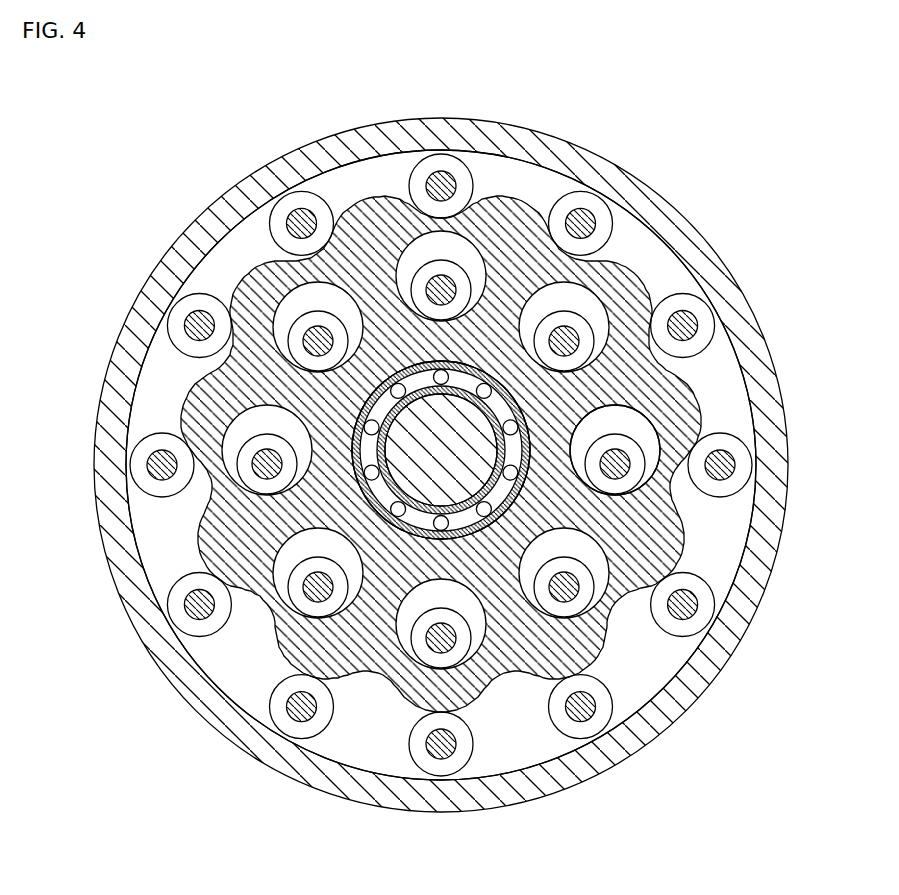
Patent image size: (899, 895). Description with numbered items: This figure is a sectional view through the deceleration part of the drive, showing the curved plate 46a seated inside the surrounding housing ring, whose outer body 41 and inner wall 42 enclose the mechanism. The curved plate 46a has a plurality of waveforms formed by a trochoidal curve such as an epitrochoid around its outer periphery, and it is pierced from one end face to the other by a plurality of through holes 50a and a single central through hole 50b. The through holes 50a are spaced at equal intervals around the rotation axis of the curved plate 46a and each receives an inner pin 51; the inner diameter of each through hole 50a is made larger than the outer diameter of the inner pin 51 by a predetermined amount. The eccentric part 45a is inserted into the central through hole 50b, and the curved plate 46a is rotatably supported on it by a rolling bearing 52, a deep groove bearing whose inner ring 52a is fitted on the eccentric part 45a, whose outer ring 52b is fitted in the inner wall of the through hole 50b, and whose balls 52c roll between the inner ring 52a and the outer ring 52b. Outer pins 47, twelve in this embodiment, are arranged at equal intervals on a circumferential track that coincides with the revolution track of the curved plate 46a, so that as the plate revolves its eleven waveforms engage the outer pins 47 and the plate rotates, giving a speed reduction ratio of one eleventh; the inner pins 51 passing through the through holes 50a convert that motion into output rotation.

The speed reducer 41 is at (218, 193).
The casing (outer ring) 42 is at (180, 257).
The eccentric part 45a is at (420, 480).
The curved plate 46a is at (620, 270).
The outer pin 47 is at (302, 221).
The through hole 50a is at (648, 428).
The through hole 50b is at (495, 495).
The inner pin 51 is at (445, 288).
The rolling bearing 52 is at (286, 600).
The inner ring 52a is at (380, 438).
The outer ring 52b is at (393, 370).
The balls 52c is at (399, 392).